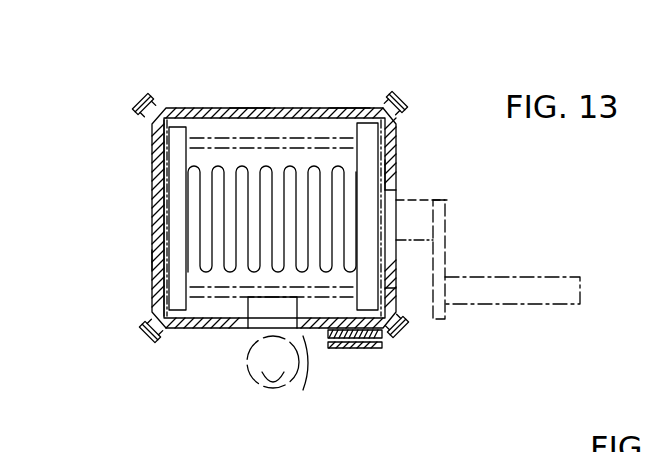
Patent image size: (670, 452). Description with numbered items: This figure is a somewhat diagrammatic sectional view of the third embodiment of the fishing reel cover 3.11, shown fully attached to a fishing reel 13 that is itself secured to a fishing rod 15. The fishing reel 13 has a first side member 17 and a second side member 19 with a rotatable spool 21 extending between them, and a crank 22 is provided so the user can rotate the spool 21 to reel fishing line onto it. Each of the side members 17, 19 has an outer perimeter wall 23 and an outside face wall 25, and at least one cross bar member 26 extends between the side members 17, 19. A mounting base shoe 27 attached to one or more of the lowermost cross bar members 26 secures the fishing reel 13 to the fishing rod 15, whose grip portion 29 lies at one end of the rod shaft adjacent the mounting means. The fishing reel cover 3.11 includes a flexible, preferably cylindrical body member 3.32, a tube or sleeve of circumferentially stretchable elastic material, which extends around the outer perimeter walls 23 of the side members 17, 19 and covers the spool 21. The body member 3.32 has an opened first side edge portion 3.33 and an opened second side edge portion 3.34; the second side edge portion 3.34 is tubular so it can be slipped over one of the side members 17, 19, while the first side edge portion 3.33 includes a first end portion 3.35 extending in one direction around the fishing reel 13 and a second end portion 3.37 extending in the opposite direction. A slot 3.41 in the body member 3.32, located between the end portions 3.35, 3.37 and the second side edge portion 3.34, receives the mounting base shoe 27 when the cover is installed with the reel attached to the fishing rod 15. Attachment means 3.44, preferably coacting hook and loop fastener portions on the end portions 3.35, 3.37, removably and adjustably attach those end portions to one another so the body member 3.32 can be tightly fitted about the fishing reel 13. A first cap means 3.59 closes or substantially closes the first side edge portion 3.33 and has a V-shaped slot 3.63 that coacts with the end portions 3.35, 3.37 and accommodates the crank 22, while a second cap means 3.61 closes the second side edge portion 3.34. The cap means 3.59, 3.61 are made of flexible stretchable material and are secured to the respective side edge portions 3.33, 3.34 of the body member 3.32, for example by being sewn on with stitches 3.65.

The fishing reel cover 3.11 is at (126, 80).
The second side edge portion 3.34 is at (167, 108).
The outer perimeter wall 23 is at (180, 134).
The cross bar member 26 is at (230, 140).
The body member 3.32 is at (289, 80).
The rotatable spool 21 is at (290, 167).
The first side edge portion 3.33 is at (357, 110).
The stitches 3.65 is at (397, 97).
The first side member 17 is at (396, 158).
The first cap means 3.59 is at (393, 173).
The slot 3.63 is at (404, 192).
The fishing reel 13 is at (158, 210).
The outside face wall 25 is at (164, 233).
The second cap means 3.61 is at (165, 252).
The second side member 19 is at (177, 265).
The slot 3.41 is at (238, 345).
The fishing rod 15 is at (257, 398).
The grip portion 29 is at (280, 394).
The mounting base shoe 27 is at (308, 389).
The first end portion 3.35 is at (330, 340).
The second end portion 3.37 is at (368, 349).
The attachment means 3.44 is at (384, 357).
The crank 22 is at (517, 306).